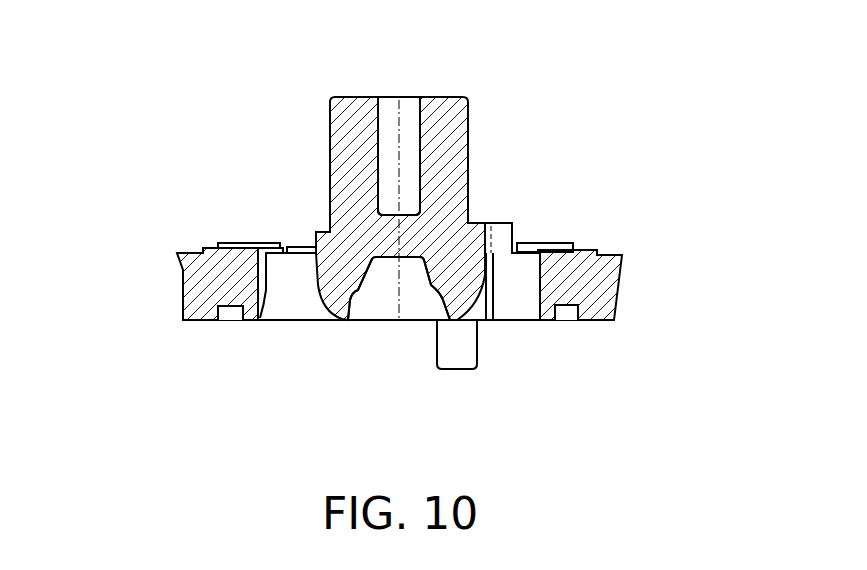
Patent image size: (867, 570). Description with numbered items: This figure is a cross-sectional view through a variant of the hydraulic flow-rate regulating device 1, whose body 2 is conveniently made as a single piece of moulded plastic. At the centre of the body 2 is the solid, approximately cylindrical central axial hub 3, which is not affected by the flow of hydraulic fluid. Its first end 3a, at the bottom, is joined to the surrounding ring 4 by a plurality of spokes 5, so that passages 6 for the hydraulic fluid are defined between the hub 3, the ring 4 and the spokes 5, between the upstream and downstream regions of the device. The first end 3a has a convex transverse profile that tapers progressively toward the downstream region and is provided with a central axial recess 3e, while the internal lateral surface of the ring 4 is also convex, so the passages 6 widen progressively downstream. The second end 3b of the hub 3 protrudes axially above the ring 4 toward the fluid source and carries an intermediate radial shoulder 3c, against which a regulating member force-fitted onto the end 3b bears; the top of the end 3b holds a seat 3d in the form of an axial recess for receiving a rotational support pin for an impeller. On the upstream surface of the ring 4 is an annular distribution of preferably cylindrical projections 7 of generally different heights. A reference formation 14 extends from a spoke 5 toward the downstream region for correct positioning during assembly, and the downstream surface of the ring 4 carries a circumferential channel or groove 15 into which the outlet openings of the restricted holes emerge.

The hydraulic flow-rate regulating device 1 is at (268, 162).
The body 2 is at (181, 283).
The central axial hub 3 is at (477, 130).
The first end of the hub 3a is at (372, 303).
The second end of the hub 3b is at (343, 128).
The intermediate radial shoulder 3c is at (325, 220).
The seat 3d is at (404, 98).
The central axial recess 3e is at (428, 288).
The ring 4 is at (181, 252).
The spokes 5 is at (307, 300).
The passages 6 is at (284, 309).
The projections 7 is at (303, 247).
The reference formation 14 is at (457, 358).
The circumferential channel or groove 15 is at (230, 322).